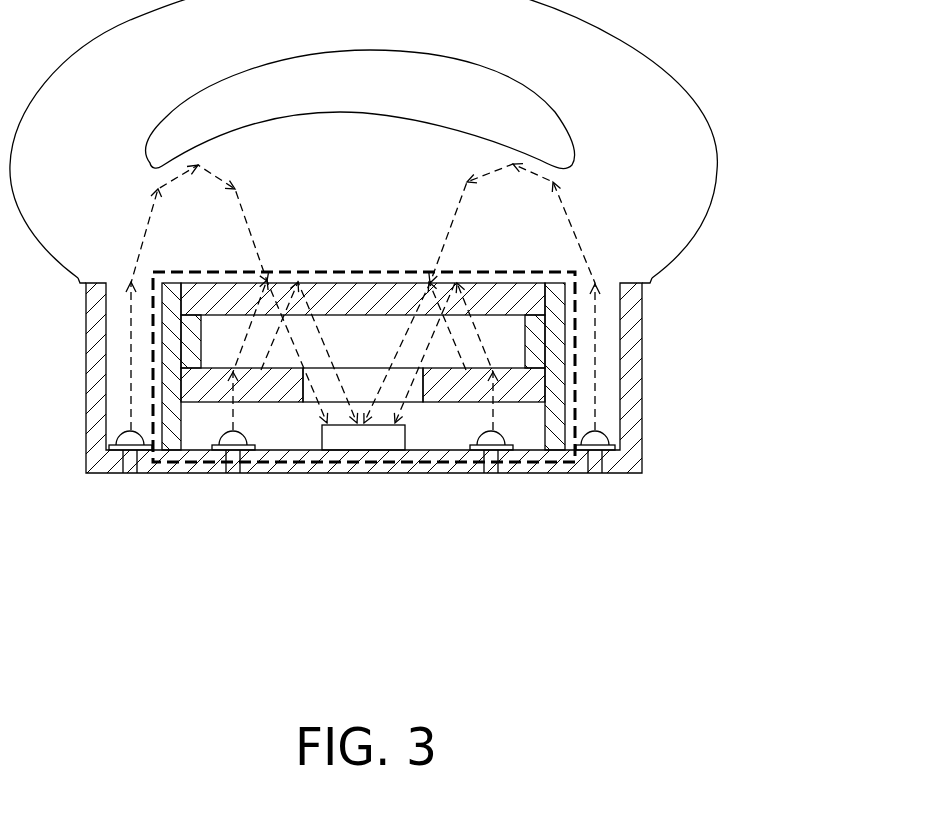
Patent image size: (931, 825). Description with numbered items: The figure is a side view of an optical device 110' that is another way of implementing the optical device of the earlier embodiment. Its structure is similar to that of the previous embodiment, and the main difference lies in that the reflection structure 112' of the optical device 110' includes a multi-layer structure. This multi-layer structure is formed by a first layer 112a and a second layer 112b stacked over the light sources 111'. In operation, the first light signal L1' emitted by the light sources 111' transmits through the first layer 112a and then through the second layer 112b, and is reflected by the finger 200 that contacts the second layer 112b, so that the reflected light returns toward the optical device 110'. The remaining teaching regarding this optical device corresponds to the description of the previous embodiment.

The cover / finger-contact member 200 is at (667, 68).
The optical sensing module 110' is at (411, 416).
The light guide structure 112' is at (364, 411).
The first light guide layer 112a is at (546, 385).
The second light guide layer 112b is at (546, 302).
The light emitting element 111' is at (512, 485).
The light beam L1' is at (458, 414).